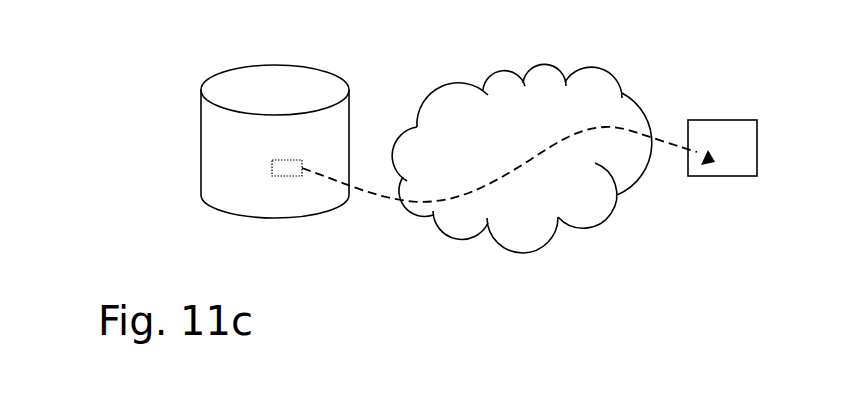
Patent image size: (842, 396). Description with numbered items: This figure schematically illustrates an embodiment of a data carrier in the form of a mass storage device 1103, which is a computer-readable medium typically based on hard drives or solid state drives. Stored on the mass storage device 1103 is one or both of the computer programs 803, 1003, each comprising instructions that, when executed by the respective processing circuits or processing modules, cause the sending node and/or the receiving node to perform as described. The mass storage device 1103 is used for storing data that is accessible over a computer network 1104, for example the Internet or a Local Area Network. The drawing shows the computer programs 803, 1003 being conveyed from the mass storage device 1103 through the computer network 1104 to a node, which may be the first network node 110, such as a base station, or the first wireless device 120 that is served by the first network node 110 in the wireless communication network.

The mass storage device 1103 is at (201, 135).
The computer program 803 is at (280, 210).
The computer program 1003 is at (276, 177).
The computer network 1104 is at (462, 240).
The first network node 110 is at (717, 175).
The first wireless device 120 is at (703, 177).